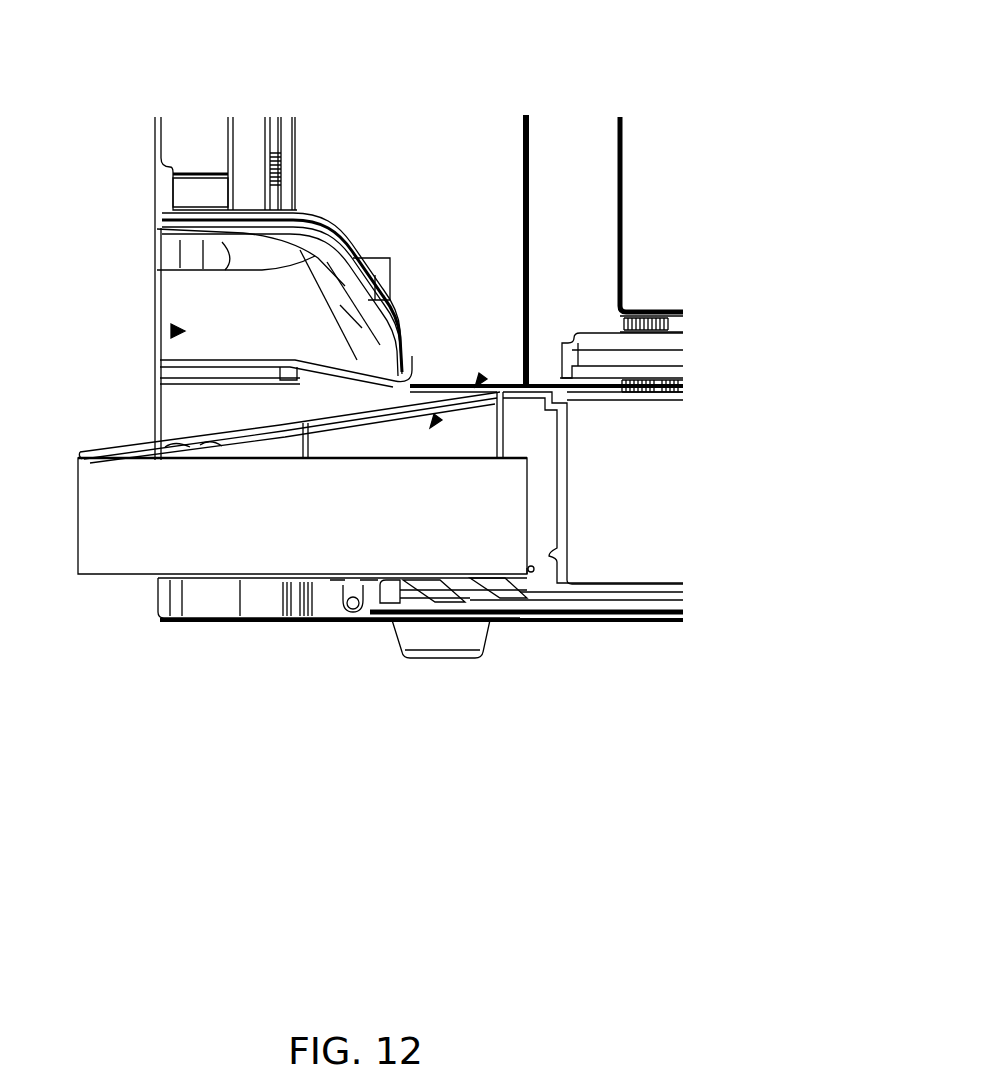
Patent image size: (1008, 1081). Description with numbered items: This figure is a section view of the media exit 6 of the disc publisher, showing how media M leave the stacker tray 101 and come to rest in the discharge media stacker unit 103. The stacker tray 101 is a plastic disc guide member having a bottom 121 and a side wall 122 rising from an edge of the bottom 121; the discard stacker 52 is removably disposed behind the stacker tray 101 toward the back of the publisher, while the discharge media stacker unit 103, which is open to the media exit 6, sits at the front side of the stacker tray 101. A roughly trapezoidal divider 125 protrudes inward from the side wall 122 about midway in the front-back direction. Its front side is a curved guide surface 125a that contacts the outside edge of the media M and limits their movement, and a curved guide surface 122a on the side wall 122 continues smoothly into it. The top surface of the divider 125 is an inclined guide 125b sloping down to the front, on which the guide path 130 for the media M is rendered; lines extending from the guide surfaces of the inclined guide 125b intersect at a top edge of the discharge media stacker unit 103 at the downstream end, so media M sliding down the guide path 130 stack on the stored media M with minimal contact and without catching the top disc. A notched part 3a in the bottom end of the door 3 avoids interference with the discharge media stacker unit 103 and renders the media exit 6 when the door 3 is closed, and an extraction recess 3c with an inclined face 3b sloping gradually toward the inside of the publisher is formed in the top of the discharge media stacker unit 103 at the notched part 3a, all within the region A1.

The region A1 is at (458, 127).
The door 3 is at (153, 188).
The notched part 3a is at (357, 384).
The inclined face 3b is at (345, 309).
The extraction recess 3c is at (212, 267).
The media exit 6 is at (171, 331).
The stacker tray 101 is at (528, 296).
The discharge media stacker unit 103 is at (436, 414).
The bottom 121 is at (156, 600).
The side wall 122 is at (457, 395).
The curved guide surface 122a is at (263, 457).
The divider 125 is at (533, 390).
The curved guide surface 125a is at (477, 433).
The inclined guide 125b is at (481, 373).
The guide path 130 is at (384, 300).
The discard stacker 52 is at (560, 590).
The media M is at (642, 385).